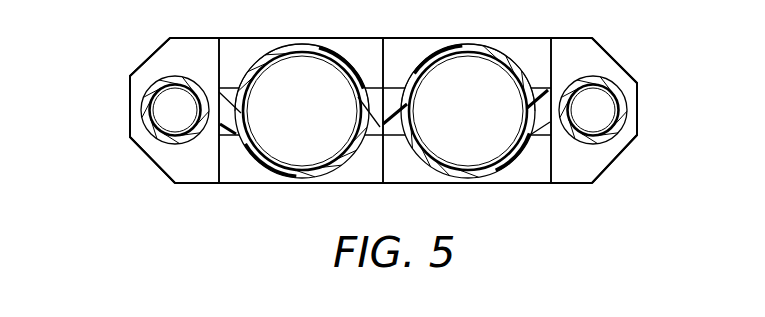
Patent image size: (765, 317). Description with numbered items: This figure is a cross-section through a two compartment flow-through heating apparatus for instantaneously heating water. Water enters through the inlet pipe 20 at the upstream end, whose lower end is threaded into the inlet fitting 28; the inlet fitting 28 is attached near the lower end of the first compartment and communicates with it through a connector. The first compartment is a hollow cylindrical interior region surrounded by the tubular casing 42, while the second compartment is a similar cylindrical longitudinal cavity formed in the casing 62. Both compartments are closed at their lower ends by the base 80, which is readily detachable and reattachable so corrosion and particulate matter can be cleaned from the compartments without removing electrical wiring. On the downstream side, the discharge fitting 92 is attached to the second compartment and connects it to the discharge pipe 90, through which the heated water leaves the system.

The inlet pipe 20 is at (620, 93).
The inlet fitting 28 is at (600, 55).
The casing 42 is at (497, 172).
The casing 62 is at (308, 175).
The base 80 is at (313, 62).
The discharge pipe 90 is at (148, 105).
The discharge fitting 92 is at (153, 63).